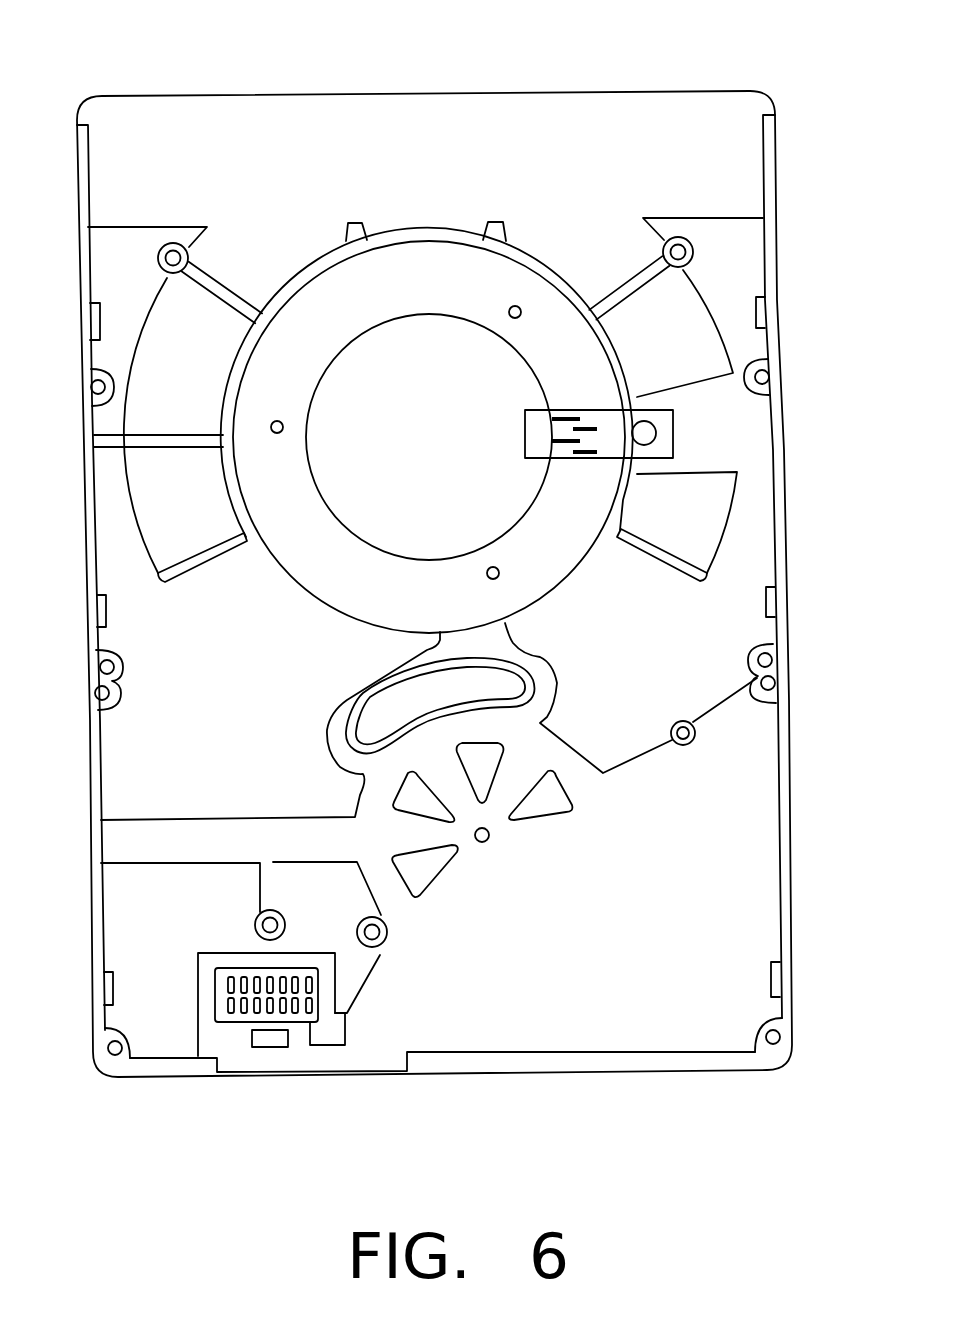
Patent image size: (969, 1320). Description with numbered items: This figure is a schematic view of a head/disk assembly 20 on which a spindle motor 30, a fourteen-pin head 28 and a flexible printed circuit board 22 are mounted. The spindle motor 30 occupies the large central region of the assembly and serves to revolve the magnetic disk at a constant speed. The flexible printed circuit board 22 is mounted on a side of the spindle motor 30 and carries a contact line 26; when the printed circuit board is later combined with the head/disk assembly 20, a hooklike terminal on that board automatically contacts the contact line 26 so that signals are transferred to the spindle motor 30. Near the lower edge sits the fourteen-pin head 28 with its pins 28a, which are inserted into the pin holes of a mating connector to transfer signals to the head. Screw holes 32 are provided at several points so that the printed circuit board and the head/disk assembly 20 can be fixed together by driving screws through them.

The head/disk assembly 20 is at (166, 84).
The flexible printed circuit board 22 is at (690, 431).
The contact line 26 is at (562, 385).
The 14-pin head 28 is at (272, 1011).
The pins 28a is at (295, 976).
The spindle motor 30 is at (372, 507).
The screw holes 32 is at (173, 243).